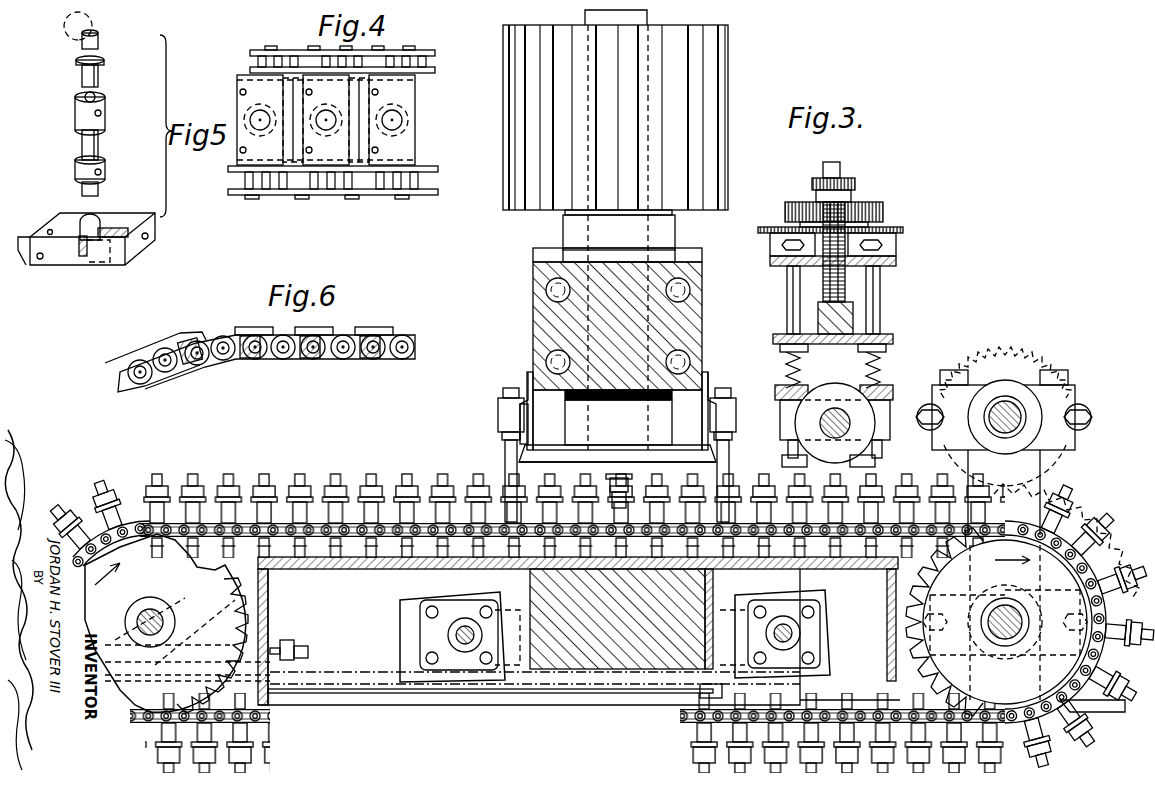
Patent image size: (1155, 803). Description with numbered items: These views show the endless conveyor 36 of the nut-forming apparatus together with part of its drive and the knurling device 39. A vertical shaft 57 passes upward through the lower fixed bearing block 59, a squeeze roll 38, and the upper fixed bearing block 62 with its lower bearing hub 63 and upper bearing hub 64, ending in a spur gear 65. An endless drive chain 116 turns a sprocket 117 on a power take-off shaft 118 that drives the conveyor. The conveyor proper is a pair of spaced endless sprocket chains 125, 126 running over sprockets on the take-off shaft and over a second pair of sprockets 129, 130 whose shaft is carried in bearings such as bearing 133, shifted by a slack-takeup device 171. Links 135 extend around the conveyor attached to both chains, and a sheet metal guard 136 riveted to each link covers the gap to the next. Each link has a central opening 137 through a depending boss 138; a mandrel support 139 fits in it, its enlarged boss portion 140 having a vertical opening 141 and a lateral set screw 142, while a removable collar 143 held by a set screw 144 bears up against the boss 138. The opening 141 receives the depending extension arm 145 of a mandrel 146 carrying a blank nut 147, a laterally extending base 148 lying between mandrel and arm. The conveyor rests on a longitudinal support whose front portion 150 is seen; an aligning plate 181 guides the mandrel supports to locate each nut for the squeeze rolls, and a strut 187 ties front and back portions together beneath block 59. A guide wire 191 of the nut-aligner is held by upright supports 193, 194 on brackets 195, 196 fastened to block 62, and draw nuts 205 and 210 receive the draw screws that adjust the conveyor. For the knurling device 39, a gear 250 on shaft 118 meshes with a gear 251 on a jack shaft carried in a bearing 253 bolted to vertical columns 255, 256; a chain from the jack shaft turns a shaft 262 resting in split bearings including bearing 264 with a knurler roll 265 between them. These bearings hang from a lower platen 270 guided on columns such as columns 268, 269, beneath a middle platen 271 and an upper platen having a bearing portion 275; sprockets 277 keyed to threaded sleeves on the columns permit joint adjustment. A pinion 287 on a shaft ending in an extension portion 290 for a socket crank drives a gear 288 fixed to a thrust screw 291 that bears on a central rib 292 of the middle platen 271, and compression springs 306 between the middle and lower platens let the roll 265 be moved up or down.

In FIG. 3, the endless conveyor 36 is at (286, 731).
In FIG. 3, the squeeze roll 38 is at (525, 458).
In FIG. 3, the knurling device 39 is at (903, 206).
In FIG. 3, the vertical shaft 57 is at (650, 22).
In FIG. 3, the lower fixed bearing block 59 is at (615, 665).
In FIG. 3, the upper fixed bearing block 62 is at (542, 292).
In FIG. 3, the lower bearing hub 63 is at (566, 408).
In FIG. 3, the upper bearing hub 64 is at (672, 240).
In FIG. 3, the spur gear 65 is at (720, 55).
In FIG. 3, the endless drive chain 116 is at (880, 706).
In FIG. 3, the sprocket 117 is at (892, 655).
In FIG. 3, the power take-off shaft 118 is at (1003, 648).
In FIG. 4, the endless sprocket chain 125 is at (246, 192).
In FIG. 6, the endless sprocket chain 125 is at (338, 362).
In FIG. 3, the endless sprocket chain 125 is at (238, 522).
In FIG. 4, the endless sprocket chain 126 is at (270, 50).
In FIG. 3, the sprocket 129 is at (134, 700).
In FIG. 3, the sprocket 130 is at (240, 578).
In FIG. 3, the bearing 133 is at (180, 600).
In FIG. 5, the link 135 is at (58, 222).
In FIG. 4, the link 135 is at (406, 97).
In FIG. 6, the link 135 is at (208, 355).
In FIG. 3, the link 135 is at (308, 522).
In FIG. 4, the sheet metal guard 136 is at (345, 145).
In FIG. 6, the sheet metal guard 136 is at (183, 334).
In FIG. 5, the central opening 137 is at (97, 220).
In FIG. 5, the depending boss 138 is at (80, 252).
In FIG. 5, the mandrel support 139 is at (83, 143).
In FIG. 3, the mandrel support 139 is at (440, 548).
In FIG. 5, the enlarged boss portion 140 is at (76, 113).
In FIG. 5, the vertical opening 141 is at (80, 96).
In FIG. 5, the lateral set screw 142 is at (102, 113).
In FIG. 5, the removable and adjustable collar 143 is at (76, 170).
In FIG. 5, the set screw 144 is at (102, 172).
In FIG. 5, the depending extension arm 145 is at (100, 72).
In FIG. 5, the mandrel 146 is at (99, 42).
In FIG. 3, the mandrel 146 is at (614, 478).
In FIG. 5, the blank nut 147 is at (80, 36).
In FIG. 3, the blank nut 147 is at (622, 478).
In FIG. 5, the laterally extending base 148 is at (77, 61).
In FIG. 3, the front portion 150 is at (380, 708).
In FIG. 3, the slack-takeup device 171 is at (289, 638).
In FIG. 3, the aligning plate 181 is at (350, 550).
In FIG. 3, the strut 187 is at (632, 694).
In FIG. 3, the guide wire 191 is at (505, 463).
In FIG. 3, the upright support 193 is at (522, 412).
In FIG. 3, the upright support 194 is at (733, 395).
In FIG. 3, the bracket 195 is at (528, 382).
In FIG. 3, the bracket 196 is at (710, 385).
In FIG. 3, the draw nut 205 is at (420, 645).
In FIG. 3, the draw nut 210 is at (820, 636).
In FIG. 3, the gear 250 is at (1093, 522).
In FIG. 3, the gear 251 is at (1008, 350).
In FIG. 3, the bearing 253 is at (1084, 406).
In FIG. 3, the vertical column 255 is at (1062, 370).
In FIG. 3, the vertical column 256 is at (945, 370).
In FIG. 3, the shaft 262 is at (796, 425).
In FIG. 3, the split bearing 264 is at (892, 432).
In FIG. 3, the knurler roll 265 is at (860, 455).
In FIG. 3, the vertical column 268 is at (880, 290).
In FIG. 3, the vertical column 269 is at (787, 286).
In FIG. 3, the lower platen 270 is at (888, 388).
In FIG. 3, the middle platen 271 is at (893, 340).
In FIG. 3, the bearing portion 275 is at (772, 246).
In FIG. 3, the sprocket 277 is at (770, 226).
In FIG. 3, the pinion 287 is at (856, 190).
In FIG. 3, the gear 288 is at (800, 203).
In FIG. 3, the extension portion 290 is at (842, 170).
In FIG. 3, the thrust screw 291 is at (823, 290).
In FIG. 3, the central rib 292 is at (853, 312).
In FIG. 3, the compression spring 306 is at (801, 364).